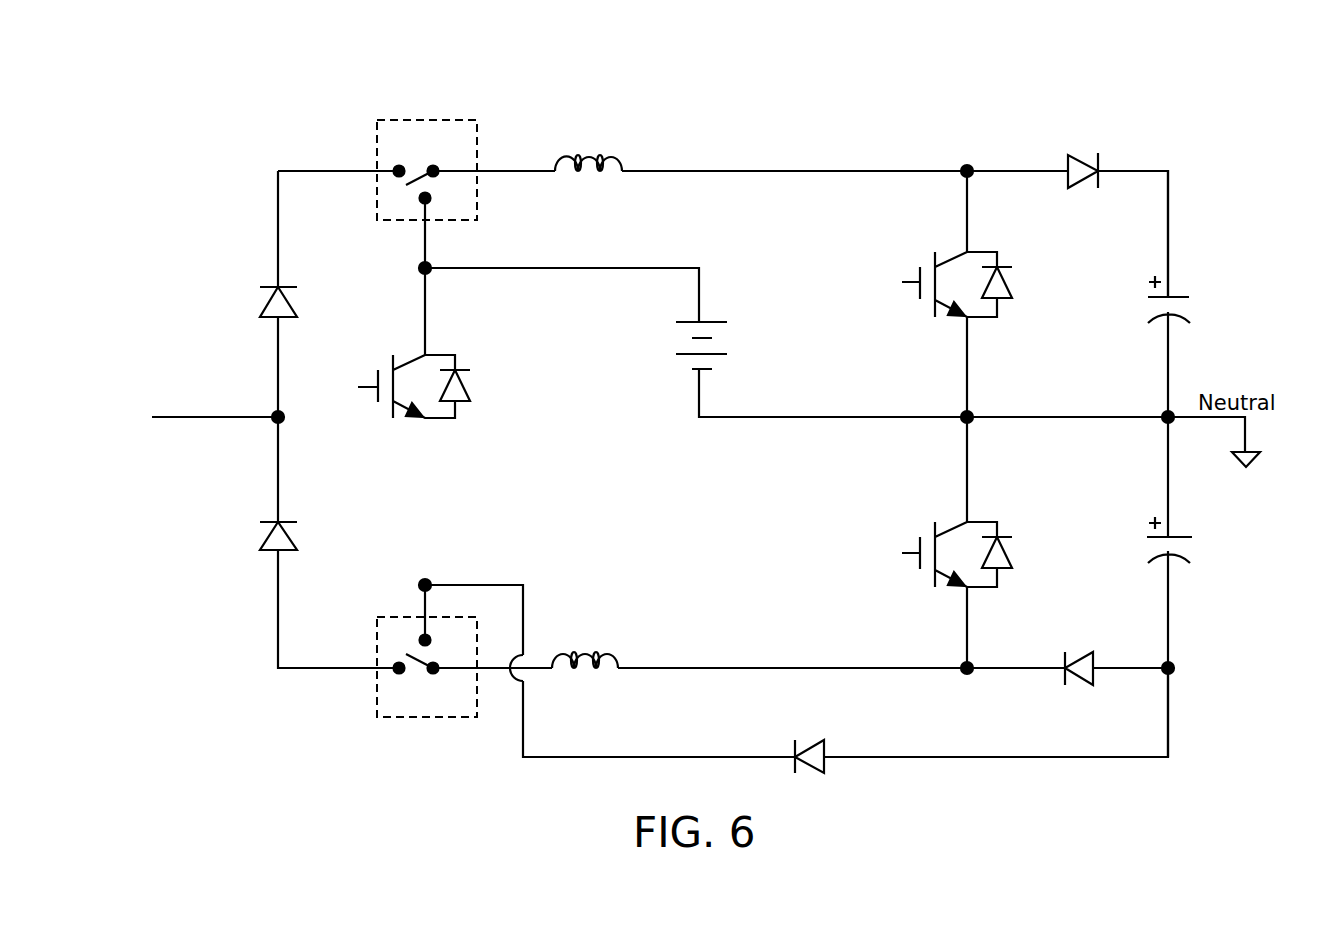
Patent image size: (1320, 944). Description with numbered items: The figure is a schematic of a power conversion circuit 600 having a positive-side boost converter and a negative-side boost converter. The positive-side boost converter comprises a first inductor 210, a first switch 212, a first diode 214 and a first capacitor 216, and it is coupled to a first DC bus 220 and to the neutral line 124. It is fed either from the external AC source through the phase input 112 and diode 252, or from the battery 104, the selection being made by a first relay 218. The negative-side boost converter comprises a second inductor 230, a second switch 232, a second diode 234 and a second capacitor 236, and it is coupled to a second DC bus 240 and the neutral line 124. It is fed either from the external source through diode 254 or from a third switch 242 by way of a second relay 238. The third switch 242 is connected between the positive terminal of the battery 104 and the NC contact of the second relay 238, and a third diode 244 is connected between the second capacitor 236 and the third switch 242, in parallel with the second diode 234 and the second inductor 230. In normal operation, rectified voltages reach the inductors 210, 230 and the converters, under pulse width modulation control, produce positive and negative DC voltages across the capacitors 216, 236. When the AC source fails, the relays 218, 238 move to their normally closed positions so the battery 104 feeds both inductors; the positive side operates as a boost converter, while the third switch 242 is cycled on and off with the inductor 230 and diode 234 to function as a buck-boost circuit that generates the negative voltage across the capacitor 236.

The circuit 600 is at (858, 123).
The phase input 112 is at (212, 418).
The diode 252 is at (278, 287).
The diode 254 is at (270, 552).
The first relay 218 is at (437, 120).
The second relay 238 is at (393, 717).
The first inductor 210 is at (607, 143).
The second inductor 230 is at (600, 670).
The battery 104 is at (717, 322).
The neutral line 124 is at (778, 417).
The third switch 242 is at (440, 355).
The first switch 212 is at (935, 255).
The second switch 232 is at (935, 585).
The first diode 214 is at (1098, 165).
The second diode 234 is at (1065, 675).
The third diode 244 is at (824, 765).
The first DC bus 220 is at (1168, 195).
The first capacitor 216 is at (1190, 318).
The second capacitor 236 is at (1185, 555).
The second DC bus 240 is at (1168, 635).